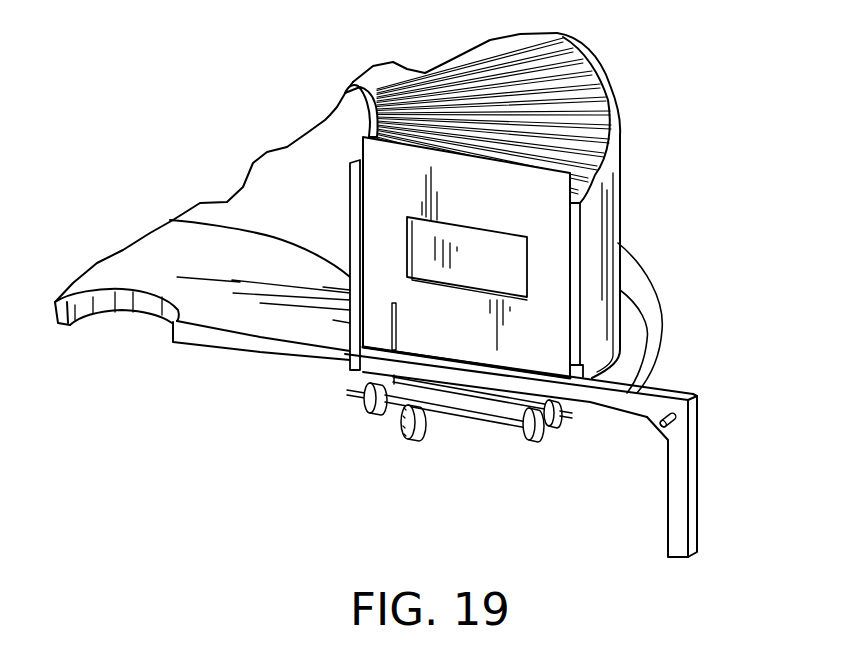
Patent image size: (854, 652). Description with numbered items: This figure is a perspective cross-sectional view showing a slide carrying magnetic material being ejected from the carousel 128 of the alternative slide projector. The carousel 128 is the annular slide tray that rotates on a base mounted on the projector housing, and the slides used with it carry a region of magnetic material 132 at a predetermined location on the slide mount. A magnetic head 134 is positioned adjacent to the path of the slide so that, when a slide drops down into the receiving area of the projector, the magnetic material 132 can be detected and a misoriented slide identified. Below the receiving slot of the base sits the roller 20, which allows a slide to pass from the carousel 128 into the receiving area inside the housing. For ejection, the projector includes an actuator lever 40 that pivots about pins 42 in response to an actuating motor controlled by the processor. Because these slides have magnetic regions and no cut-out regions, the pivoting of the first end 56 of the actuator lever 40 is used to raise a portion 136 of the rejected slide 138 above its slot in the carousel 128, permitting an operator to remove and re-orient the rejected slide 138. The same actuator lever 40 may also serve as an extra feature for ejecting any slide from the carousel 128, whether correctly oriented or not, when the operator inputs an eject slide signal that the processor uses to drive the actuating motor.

The roller 20 is at (367, 413).
The actuator lever 40 is at (677, 510).
The pins 42 is at (680, 423).
The first end of the actuator lever 56 is at (560, 378).
The carousel 128 is at (608, 192).
The magnetic material 132 is at (396, 325).
The magnetic head 134 is at (425, 427).
The portion of the rejected slide 136 is at (387, 177).
The rejected slide 138 is at (551, 236).